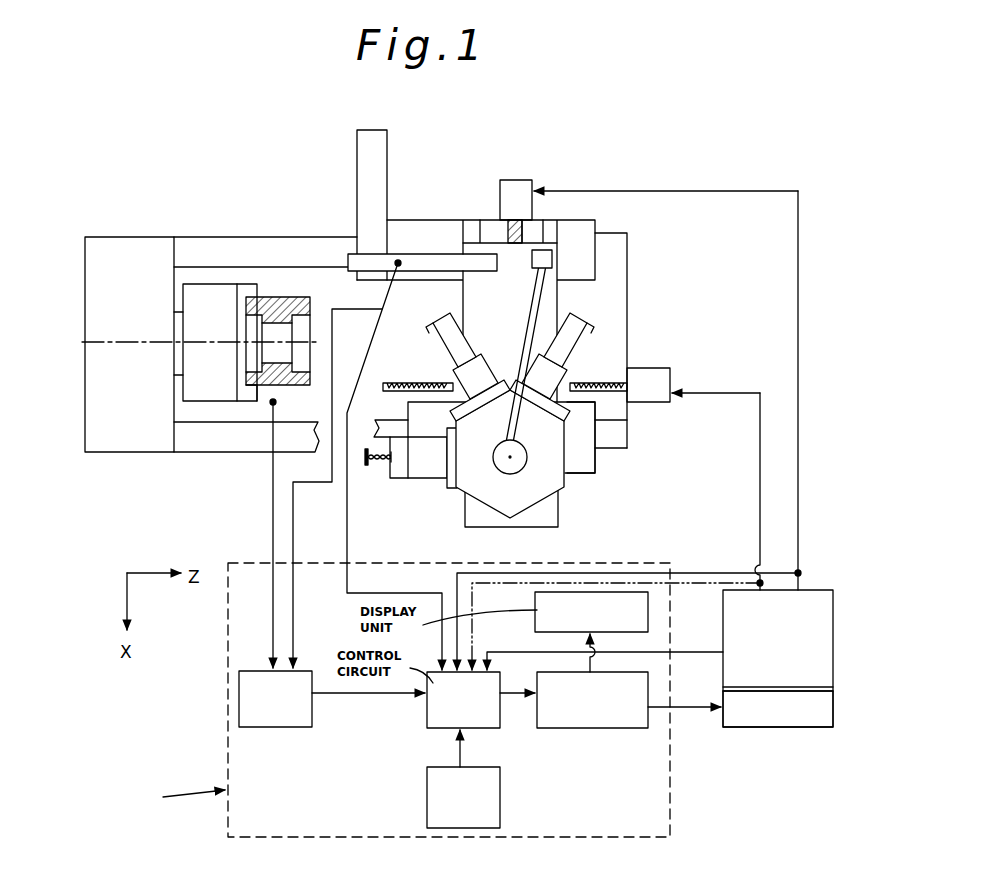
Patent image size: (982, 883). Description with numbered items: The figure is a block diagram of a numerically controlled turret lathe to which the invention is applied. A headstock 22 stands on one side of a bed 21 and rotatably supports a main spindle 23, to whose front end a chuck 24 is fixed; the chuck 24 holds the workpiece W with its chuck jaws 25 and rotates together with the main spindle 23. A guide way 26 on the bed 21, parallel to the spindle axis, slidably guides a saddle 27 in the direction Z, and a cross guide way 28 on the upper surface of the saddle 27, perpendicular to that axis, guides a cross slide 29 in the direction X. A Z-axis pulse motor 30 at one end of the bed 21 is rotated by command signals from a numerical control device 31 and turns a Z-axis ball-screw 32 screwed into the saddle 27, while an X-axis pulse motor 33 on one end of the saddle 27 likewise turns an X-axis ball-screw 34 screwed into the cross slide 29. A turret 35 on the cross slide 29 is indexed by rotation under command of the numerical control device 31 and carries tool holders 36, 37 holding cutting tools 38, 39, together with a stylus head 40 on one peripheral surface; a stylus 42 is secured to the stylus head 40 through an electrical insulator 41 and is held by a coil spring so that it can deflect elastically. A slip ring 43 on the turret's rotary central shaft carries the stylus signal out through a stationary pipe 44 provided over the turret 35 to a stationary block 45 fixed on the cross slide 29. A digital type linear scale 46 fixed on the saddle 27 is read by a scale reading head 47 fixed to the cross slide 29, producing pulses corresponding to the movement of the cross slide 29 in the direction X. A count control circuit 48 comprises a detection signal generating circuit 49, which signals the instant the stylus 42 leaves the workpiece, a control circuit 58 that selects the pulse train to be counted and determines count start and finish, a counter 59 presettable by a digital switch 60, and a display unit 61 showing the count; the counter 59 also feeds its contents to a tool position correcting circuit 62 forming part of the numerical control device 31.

The bed 21 is at (627, 293).
The headstock 22 is at (132, 433).
The main spindle 23 is at (178, 327).
The chuck 24 is at (207, 293).
The chuck jaws 25 is at (252, 402).
The guide way 26 is at (262, 238).
The saddle 27 is at (397, 230).
The cross guide way 28 is at (473, 230).
The cross slide 29 is at (485, 512).
The Z-axis pulse motor 30 is at (800, 362).
The numerical control device 31 is at (778, 658).
The Z-axis ball-screw 32 is at (615, 380).
The X-axis pulse motor 33 is at (520, 190).
The X-axis ball-screw 34 is at (500, 228).
The turret 35 is at (567, 487).
The tool holder 36 is at (432, 369).
The tool holder 37 is at (545, 400).
The cutting tool 38 is at (448, 347).
The cutting tool 39 is at (648, 315).
The stylus head 40 is at (436, 478).
The electrical insulator 41 is at (386, 468).
The stylus 42 is at (368, 468).
The slip ring 43 is at (506, 465).
The stationary pipe 44 is at (527, 335).
The stationary block 45 is at (535, 262).
The digital type linear scale 46 is at (370, 168).
The scale reading head 47 is at (425, 262).
The count control circuit 48 is at (227, 695).
The detection signal generating circuit 49 is at (328, 727).
The control circuit 58 is at (463, 700).
The counter 59 is at (592, 700).
The digital switch 60 is at (523, 807).
The display unit 61 is at (591, 612).
The tool position correcting circuit 62 is at (718, 748).